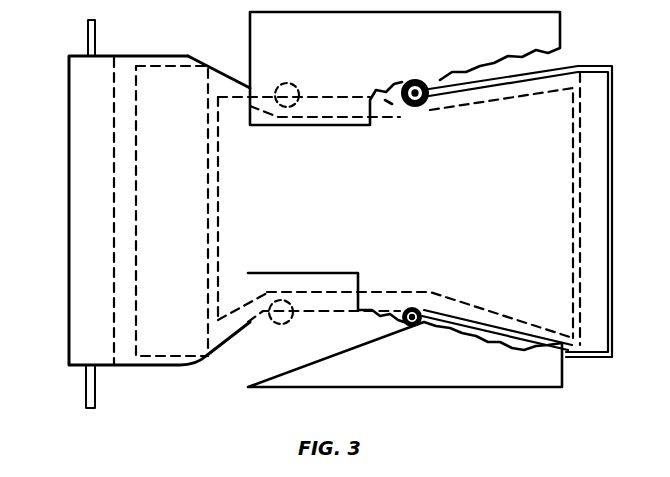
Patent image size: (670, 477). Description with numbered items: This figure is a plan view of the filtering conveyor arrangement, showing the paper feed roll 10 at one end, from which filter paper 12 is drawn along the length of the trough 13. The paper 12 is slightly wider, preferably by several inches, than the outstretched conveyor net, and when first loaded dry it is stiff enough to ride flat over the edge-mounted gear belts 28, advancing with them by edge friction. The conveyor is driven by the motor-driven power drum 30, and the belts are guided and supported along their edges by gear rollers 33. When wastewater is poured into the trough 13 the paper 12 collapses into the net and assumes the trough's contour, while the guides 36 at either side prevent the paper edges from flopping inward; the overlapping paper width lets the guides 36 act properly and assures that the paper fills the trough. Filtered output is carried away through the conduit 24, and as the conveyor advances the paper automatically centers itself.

The paper roll dispenser 10 is at (69, 308).
The filter paper 12 is at (122, 64).
The trough 13 is at (348, 192).
The conduit 24 is at (598, 259).
The gear belts 28 is at (600, 65).
The power drum 30 is at (178, 74).
The gear rollers 33 is at (290, 84).
The guides 36 is at (406, 51).